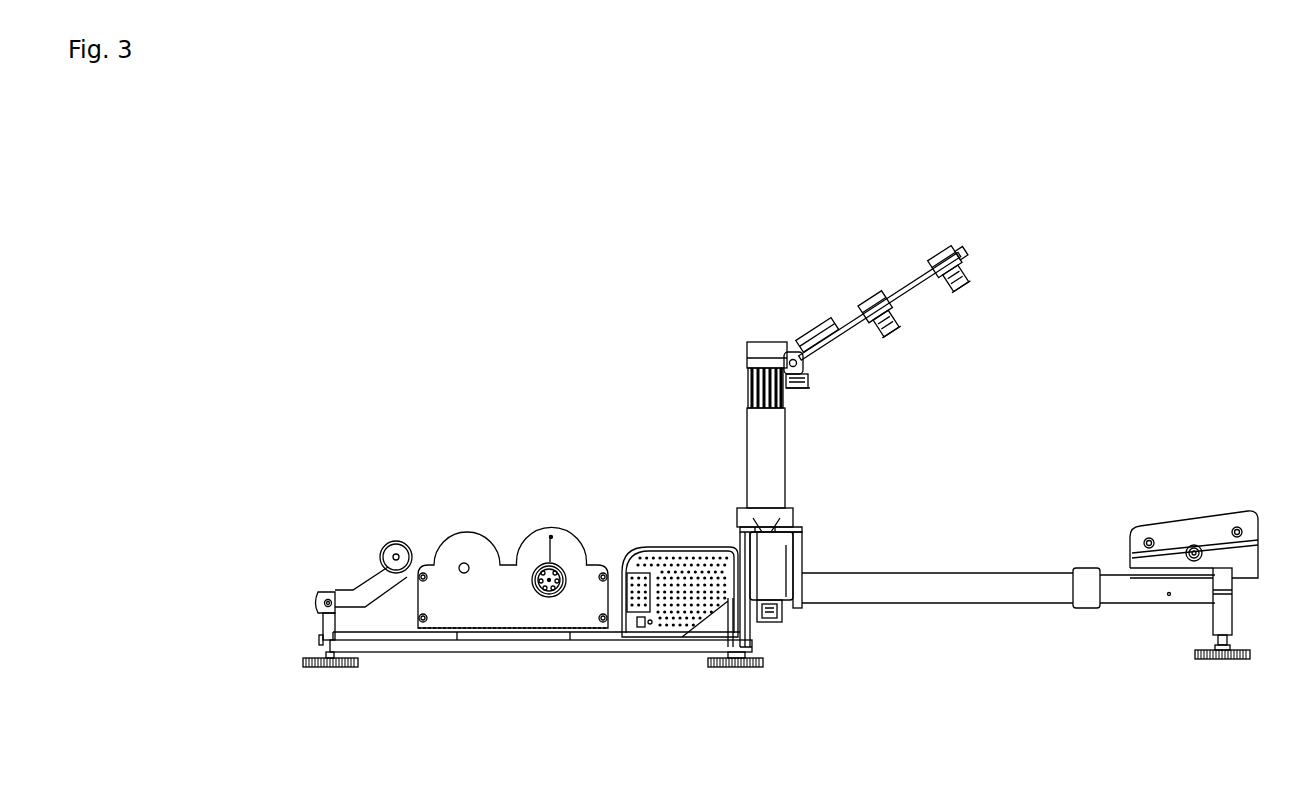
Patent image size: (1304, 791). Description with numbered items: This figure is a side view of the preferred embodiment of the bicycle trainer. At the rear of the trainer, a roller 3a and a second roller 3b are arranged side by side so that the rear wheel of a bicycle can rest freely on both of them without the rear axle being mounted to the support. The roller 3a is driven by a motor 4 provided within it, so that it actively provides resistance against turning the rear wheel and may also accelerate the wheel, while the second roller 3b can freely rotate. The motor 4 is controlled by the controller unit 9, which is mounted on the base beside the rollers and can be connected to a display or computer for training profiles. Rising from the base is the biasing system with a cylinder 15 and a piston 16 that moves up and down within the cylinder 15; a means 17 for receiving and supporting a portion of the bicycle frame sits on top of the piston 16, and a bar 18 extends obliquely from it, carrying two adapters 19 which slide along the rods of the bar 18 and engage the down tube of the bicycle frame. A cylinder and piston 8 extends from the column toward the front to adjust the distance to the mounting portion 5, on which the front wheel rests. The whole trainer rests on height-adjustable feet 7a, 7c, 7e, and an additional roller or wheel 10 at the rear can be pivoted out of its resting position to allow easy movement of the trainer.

The roller 3a is at (535, 622).
The second roller 3b is at (465, 593).
The motor 4 is at (530, 581).
The mounting portion 5 is at (1216, 485).
The foot 7a is at (1213, 661).
The foot 7c is at (755, 676).
The foot 7e is at (326, 662).
The cylinder and piston 8 is at (951, 590).
The controller unit 9 is at (681, 548).
The additional rollers or wheels 10 is at (368, 547).
The cylinder 15 is at (774, 462).
The piston 16 is at (745, 383).
The means for receiving and supporting a portion of the frame 17 is at (767, 350).
The bar 18 is at (890, 299).
The adapters 19 is at (880, 315).